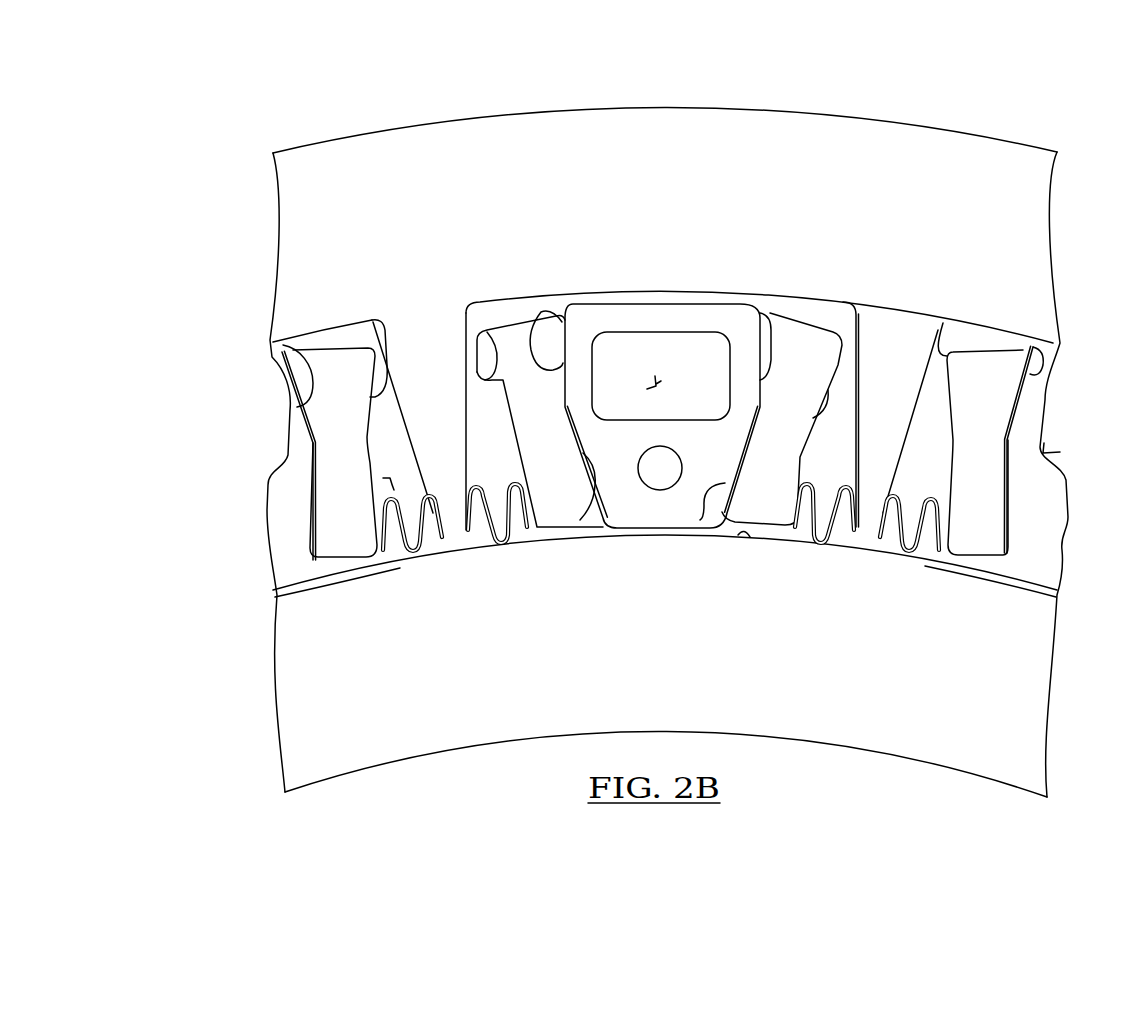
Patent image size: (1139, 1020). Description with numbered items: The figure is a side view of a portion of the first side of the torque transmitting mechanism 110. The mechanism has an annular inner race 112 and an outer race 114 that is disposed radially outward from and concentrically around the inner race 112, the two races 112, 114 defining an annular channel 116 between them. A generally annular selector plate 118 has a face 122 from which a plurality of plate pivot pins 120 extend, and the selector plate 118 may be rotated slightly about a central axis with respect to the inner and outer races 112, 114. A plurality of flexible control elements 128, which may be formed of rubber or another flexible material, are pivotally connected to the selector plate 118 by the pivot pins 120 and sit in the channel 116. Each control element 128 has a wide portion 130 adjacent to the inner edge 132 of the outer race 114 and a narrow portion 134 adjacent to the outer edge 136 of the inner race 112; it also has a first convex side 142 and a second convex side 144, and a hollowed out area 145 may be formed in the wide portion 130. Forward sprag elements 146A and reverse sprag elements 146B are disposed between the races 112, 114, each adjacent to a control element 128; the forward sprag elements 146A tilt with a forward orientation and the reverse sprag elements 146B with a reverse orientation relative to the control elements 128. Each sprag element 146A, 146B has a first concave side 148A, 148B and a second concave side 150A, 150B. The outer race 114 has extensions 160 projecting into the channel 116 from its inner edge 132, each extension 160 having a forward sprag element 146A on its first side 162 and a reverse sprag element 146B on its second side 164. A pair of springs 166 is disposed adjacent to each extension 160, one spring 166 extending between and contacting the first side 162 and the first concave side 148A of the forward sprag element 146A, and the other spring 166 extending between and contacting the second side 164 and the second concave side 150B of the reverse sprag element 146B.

The torque transmitting mechanism 110 is at (897, 84).
The inner race 112 is at (353, 615).
The outer race 114 is at (513, 143).
The channel 116 is at (383, 478).
The selector plate 118 is at (927, 483).
The plate pivot pin 120 is at (661, 478).
The face 122 is at (920, 437).
The flexible control element 128 is at (287, 497).
The wide portion 130 is at (583, 347).
The inner edge 132 is at (697, 292).
The narrow portion 134 is at (640, 507).
The outer edge 136 is at (750, 537).
The first convex side 142 is at (553, 347).
The second convex side 144 is at (283, 345).
The hollowed out area 145 is at (655, 377).
The forward sprag element 146A is at (523, 347).
The reverse sprag element 146B is at (341, 387).
The first concave side 148A is at (466, 350).
The first concave side 148B is at (305, 428).
The second concave side 150A is at (583, 513).
The second concave side 150B is at (393, 393).
The extension 160 is at (458, 533).
The first side 162 is at (466, 415).
The second side 164 is at (313, 443).
The spring 166 is at (417, 557).